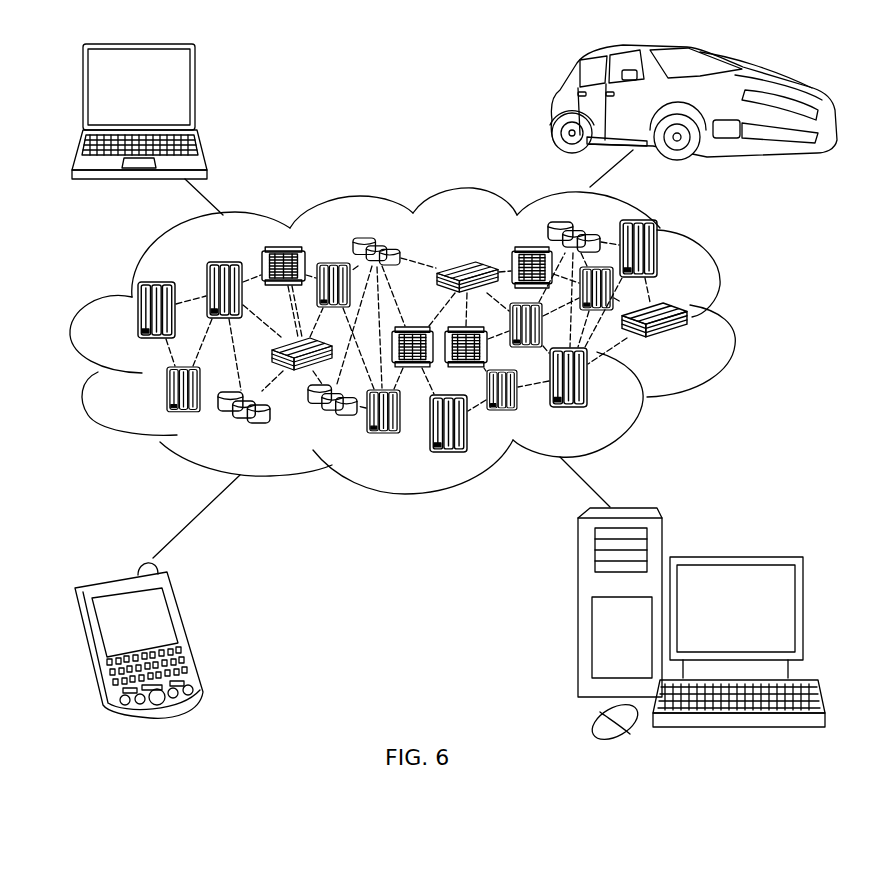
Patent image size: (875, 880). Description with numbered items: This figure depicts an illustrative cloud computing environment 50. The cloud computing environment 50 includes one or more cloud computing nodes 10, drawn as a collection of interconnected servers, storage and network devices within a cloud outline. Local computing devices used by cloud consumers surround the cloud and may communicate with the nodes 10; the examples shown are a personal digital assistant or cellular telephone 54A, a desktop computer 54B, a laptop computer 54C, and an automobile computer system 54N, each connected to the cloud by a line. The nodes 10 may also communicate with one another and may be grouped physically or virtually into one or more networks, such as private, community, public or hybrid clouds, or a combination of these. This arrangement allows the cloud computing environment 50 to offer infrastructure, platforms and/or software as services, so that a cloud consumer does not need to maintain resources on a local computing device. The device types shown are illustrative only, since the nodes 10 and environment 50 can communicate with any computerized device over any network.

The cloud computing node 10 is at (690, 342).
The cloud computing environment 50 is at (727, 317).
The personal digital assistant or cellular telephone 54A is at (188, 629).
The desktop computer 54B is at (733, 555).
The laptop computer 54C is at (196, 95).
The automobile computer system 54N is at (556, 110).